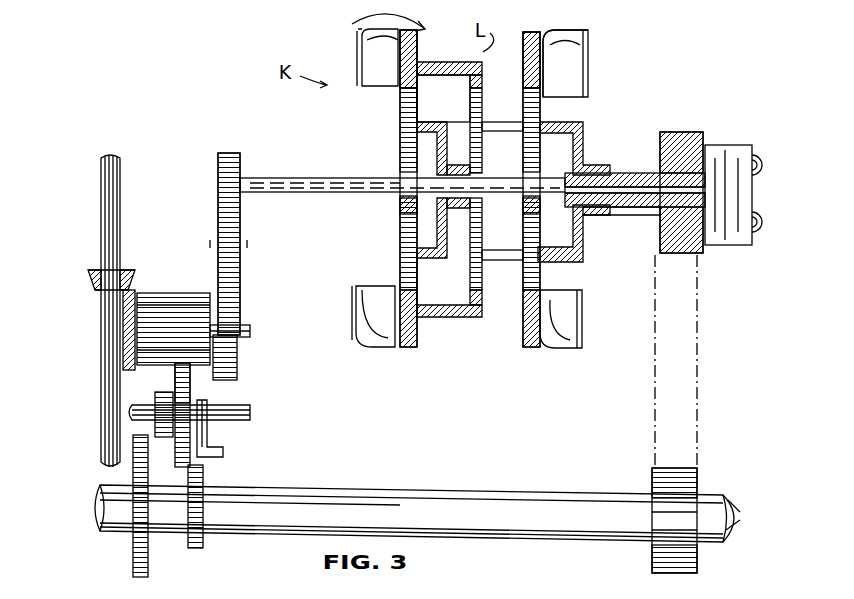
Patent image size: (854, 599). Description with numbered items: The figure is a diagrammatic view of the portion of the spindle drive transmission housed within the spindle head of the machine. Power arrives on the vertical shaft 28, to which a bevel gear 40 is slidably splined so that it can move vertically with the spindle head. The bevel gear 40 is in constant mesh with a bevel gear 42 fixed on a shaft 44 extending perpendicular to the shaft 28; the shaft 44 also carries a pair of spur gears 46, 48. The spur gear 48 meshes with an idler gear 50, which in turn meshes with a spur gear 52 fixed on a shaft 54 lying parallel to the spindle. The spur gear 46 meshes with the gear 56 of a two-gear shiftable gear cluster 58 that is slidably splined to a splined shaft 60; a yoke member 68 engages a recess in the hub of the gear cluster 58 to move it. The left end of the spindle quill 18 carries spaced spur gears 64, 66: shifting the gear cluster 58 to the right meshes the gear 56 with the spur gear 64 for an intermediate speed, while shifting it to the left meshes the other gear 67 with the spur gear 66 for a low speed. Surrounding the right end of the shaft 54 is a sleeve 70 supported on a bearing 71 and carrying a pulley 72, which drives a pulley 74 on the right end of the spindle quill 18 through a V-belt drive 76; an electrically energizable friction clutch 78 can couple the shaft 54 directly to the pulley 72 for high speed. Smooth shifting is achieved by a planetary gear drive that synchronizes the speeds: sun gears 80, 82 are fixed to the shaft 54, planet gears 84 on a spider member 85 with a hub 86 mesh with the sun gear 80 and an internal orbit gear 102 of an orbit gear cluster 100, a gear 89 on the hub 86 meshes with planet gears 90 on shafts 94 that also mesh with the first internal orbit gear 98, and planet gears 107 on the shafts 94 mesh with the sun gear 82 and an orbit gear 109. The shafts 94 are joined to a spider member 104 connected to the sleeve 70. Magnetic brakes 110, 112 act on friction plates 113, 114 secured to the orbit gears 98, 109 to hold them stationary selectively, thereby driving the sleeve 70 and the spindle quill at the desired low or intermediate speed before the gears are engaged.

The spindle quill 18 is at (413, 502).
The vertical shaft 28 is at (97, 398).
The bevel gear 40 is at (90, 285).
The bevel gear 42 is at (135, 287).
The shaft 44 is at (243, 322).
The spur gear 46 is at (190, 293).
The spur gear 48 is at (237, 349).
The idler gear 50 is at (237, 227).
The spur gear 52 is at (237, 155).
The shaft 54 is at (312, 178).
The gear 56 is at (190, 387).
The shiftable gear cluster 58 is at (172, 384).
The splined shaft 60 is at (250, 410).
The spur gear 64 is at (203, 475).
The spur gear 66 is at (138, 535).
The gear 67 is at (168, 437).
The yoke member 68 is at (205, 447).
The sleeve 70 is at (626, 173).
The bearing 71 is at (657, 235).
The pulley 72 is at (682, 132).
The pulley 74 is at (680, 493).
The V-belt drive 76 is at (700, 432).
The friction clutch 78 is at (735, 145).
The sun gear 80 is at (403, 198).
The sun gear 82 is at (523, 205).
The planet gears 84 is at (407, 130).
The spider member 85 is at (428, 112).
The hub 86 is at (457, 210).
The gear 89 is at (475, 162).
The planet gears 90 is at (483, 108).
The shafts 94 is at (508, 131).
The first internal orbit gear 98 is at (438, 66).
The orbit gear cluster 100 is at (352, 24).
The second annular internal orbit gear 102 is at (421, 78).
The spider member 104 is at (580, 128).
The planet gears 107 is at (540, 108).
The orbit gear 109 is at (523, 46).
The magnetic brake 110 is at (362, 56).
The magnetic brake 112 is at (565, 50).
The friction plate 113 is at (400, 90).
The friction plate 114 is at (555, 25).